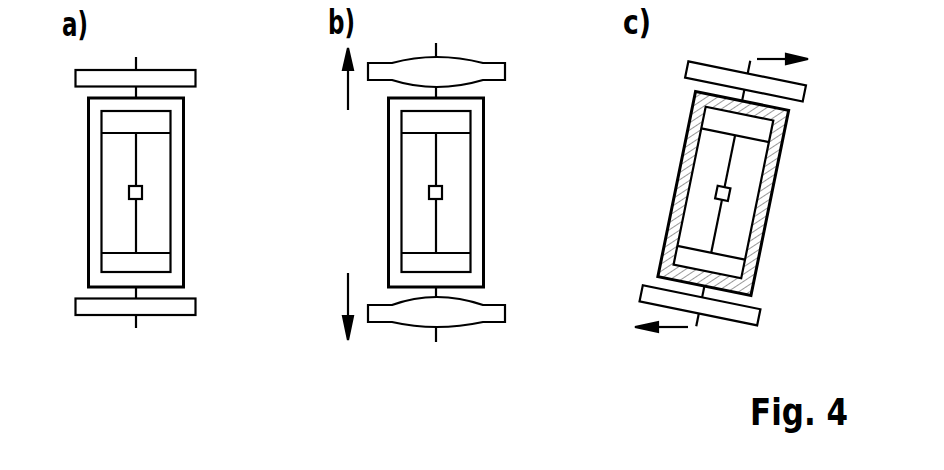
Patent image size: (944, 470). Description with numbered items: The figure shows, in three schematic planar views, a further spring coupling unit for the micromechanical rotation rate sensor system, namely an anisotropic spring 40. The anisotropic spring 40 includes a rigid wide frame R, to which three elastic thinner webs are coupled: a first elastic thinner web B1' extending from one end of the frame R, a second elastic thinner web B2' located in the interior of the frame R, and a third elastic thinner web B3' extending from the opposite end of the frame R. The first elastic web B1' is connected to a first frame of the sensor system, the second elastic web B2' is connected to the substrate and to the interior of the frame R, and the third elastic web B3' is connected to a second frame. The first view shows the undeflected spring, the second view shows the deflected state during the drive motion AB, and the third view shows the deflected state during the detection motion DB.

The anisotropic spring 40 is at (88, 130).
The rigid wide frame R is at (175, 215).
The first elastic thinner web B1' is at (442, 62).
The second elastic thinner web B2' is at (478, 193).
The third elastic thinner web B3' is at (419, 326).
The drive motion AB is at (348, 92).
The detection motion DB is at (773, 58).